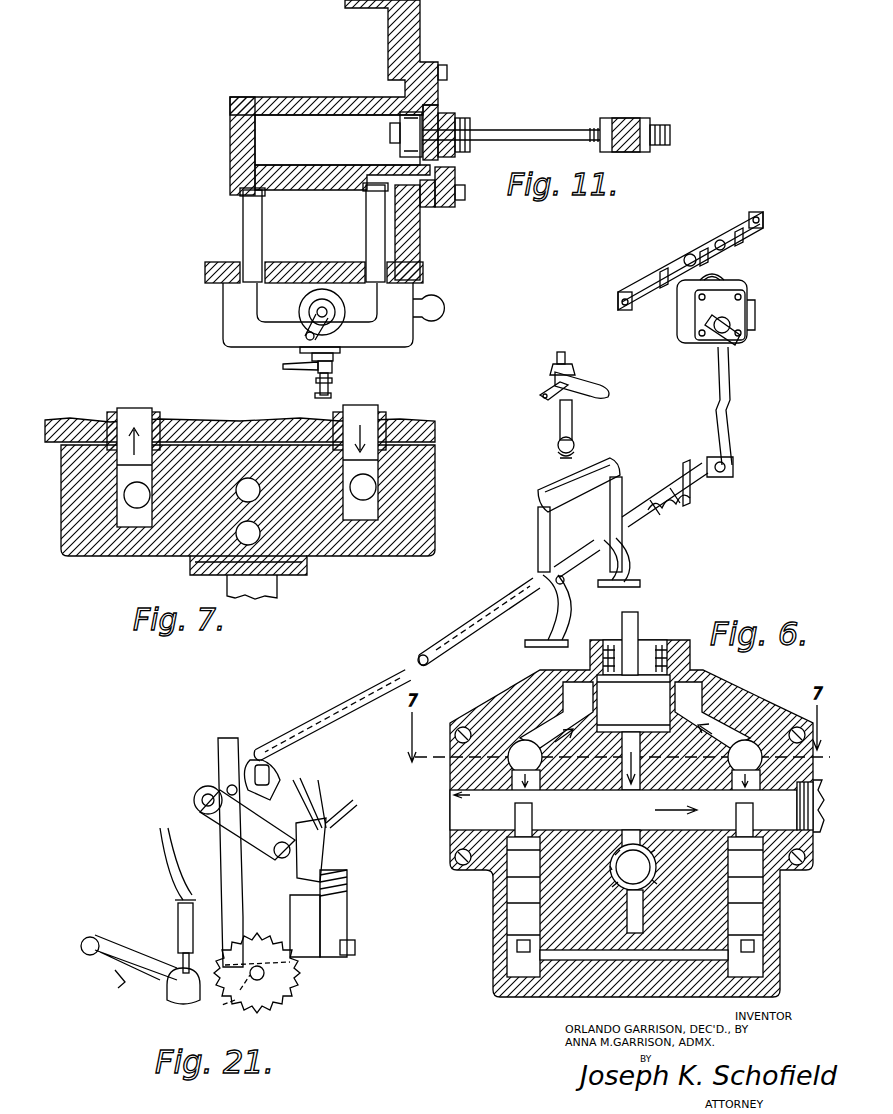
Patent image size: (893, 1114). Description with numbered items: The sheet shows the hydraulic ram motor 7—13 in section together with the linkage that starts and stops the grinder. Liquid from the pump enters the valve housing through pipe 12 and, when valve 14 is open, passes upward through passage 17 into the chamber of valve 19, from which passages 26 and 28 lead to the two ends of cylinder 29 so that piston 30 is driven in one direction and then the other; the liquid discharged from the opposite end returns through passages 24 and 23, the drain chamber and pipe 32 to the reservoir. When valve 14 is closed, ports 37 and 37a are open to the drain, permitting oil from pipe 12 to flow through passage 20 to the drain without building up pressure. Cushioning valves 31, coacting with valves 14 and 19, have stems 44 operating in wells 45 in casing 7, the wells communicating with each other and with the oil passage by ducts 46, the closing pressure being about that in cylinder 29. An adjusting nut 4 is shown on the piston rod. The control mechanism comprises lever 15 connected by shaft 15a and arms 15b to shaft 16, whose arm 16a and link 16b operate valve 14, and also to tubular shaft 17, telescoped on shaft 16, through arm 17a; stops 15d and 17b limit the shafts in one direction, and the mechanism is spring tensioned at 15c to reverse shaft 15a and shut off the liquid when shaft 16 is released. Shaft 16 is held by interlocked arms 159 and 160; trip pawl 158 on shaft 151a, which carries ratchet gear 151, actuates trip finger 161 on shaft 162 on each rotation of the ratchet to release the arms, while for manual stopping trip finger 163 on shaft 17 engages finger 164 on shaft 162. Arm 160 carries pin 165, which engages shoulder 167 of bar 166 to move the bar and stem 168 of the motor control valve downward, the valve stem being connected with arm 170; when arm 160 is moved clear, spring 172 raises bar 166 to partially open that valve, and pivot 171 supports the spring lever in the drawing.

In FIG. 11, the adjusting nut 4 is at (638, 117).
In FIG. 6, the casing 7 is at (680, 320).
In FIG. 7, the pipe 12 is at (277, 590).
In FIG. 11, the hydraulic motor 13 is at (337, 141).
In FIG. 6, the valve 14 is at (655, 885).
In FIG. 6, the lever 15 is at (605, 388).
In FIG. 6, the shaft 15a is at (572, 418).
In FIG. 6, the arms 15b is at (598, 448).
In FIG. 6, the spring tension 15c is at (556, 455).
In FIG. 6, the stop 15d is at (616, 562).
In FIG. 6, the shaft 16 is at (655, 497).
In FIG. 6, the arm 16a is at (612, 478).
In FIG. 6, the link 16b is at (724, 382).
In FIG. 7, the tubular shaft 17 is at (248, 533).
In FIG. 6, the tubular shaft 17 is at (468, 626).
In FIG. 6, the arm 17a is at (538, 528).
In FIG. 6, the stop 17b is at (548, 610).
In FIG. 6, the valve 19 is at (633, 672).
In FIG. 6, the passage 20 is at (634, 911).
In FIG. 7, the passage 23 is at (240, 496).
In FIG. 6, the passage 24 is at (672, 722).
In FIG. 11, the passage 26 is at (262, 222).
In FIG. 7, the passage 26 is at (150, 394).
In FIG. 6, the passage 26 is at (548, 733).
In FIG. 11, the passage 28 is at (368, 210).
In FIG. 7, the passage 28 is at (366, 393).
In FIG. 6, the passage 28 is at (720, 732).
In FIG. 11, the cylinder 29 is at (338, 138).
In FIG. 11, the piston 30 is at (543, 126).
In FIG. 6, the cushioning valves 31 is at (636, 786).
In FIG. 6, the pipe 32 is at (814, 858).
In FIG. 6, the port 37 is at (633, 860).
In FIG. 6, the port 37a is at (631, 875).
In FIG. 6, the stems 44 is at (635, 890).
In FIG. 6, the wells 45 is at (638, 959).
In FIG. 6, the ducts 46 is at (545, 955).
In FIG. 21, the ratchet gear 151 is at (285, 975).
In FIG. 21, the shaft 151a is at (225, 1000).
In FIG. 21, the trip pawl 158 is at (335, 905).
In FIG. 21, the arm 159 is at (262, 850).
In FIG. 21, the arm 160 is at (225, 790).
In FIG. 21, the trip finger 161 is at (315, 865).
In FIG. 21, the shaft 162 is at (345, 808).
In FIG. 21, the trip finger 163 is at (275, 746).
In FIG. 21, the finger 164 is at (325, 780).
In FIG. 21, the pin 165 is at (195, 798).
In FIG. 21, the bar 166 is at (230, 740).
In FIG. 21, the shoulder 167 is at (200, 808).
In FIG. 21, the stem 168 is at (190, 928).
In FIG. 21, the arm 170 is at (162, 962).
In FIG. 21, the pivot 171 is at (90, 935).
In FIG. 21, the spring 172 is at (135, 935).